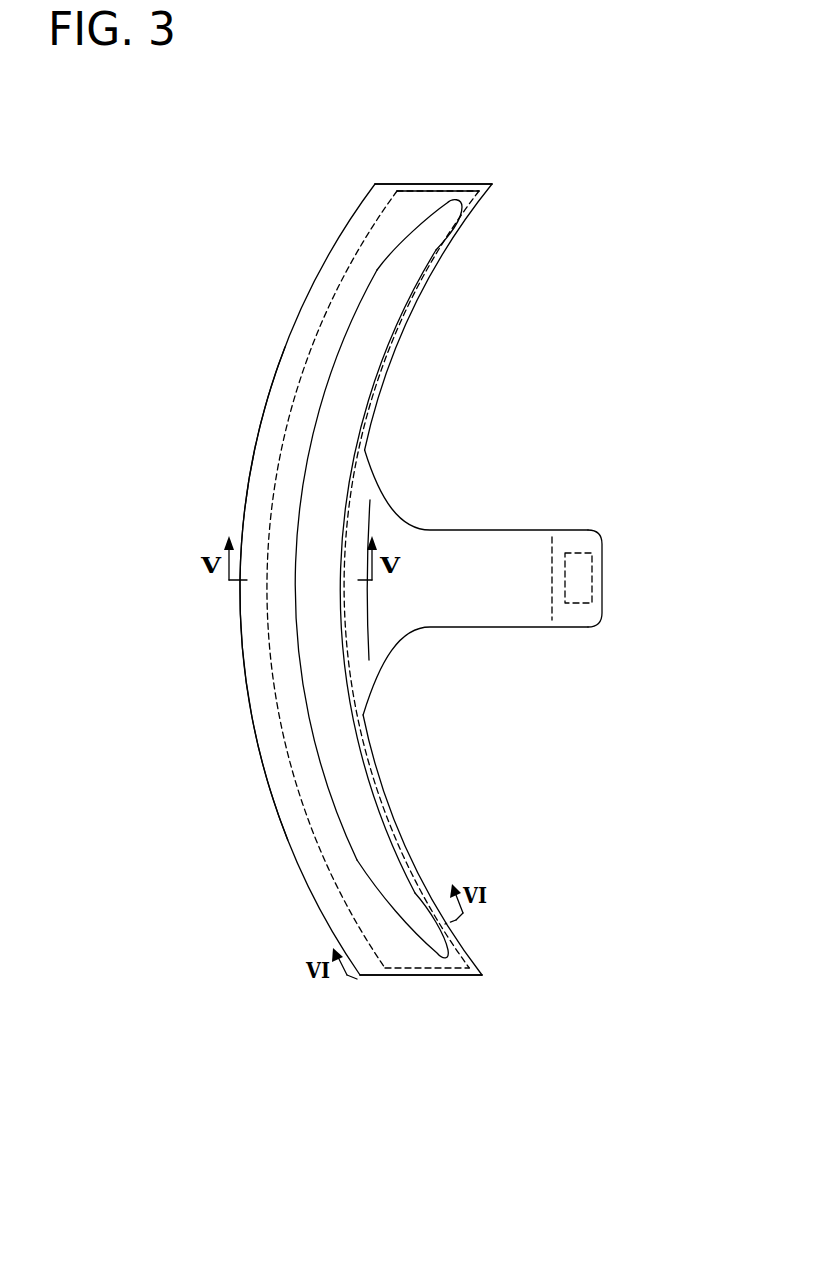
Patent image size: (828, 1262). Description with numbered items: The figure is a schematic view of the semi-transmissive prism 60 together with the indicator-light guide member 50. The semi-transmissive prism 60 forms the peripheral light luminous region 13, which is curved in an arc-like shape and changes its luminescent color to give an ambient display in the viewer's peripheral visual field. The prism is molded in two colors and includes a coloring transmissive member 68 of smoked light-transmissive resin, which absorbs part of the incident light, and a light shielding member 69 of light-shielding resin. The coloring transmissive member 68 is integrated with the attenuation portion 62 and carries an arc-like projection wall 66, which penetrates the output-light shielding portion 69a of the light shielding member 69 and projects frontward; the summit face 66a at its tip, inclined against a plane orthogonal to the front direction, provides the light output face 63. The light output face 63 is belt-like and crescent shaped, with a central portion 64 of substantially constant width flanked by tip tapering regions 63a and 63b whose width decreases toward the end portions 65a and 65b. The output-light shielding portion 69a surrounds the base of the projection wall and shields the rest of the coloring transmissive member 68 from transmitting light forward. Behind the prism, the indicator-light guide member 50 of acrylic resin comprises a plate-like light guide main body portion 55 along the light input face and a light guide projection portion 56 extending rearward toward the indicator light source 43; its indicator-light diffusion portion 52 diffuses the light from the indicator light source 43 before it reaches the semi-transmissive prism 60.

The peripheral light luminous region 13 is at (406, 250).
The indicator light source 43 is at (593, 573).
The indicator-light guide member 50 is at (531, 595).
The indicator-light diffusion portion 52 is at (378, 475).
The light guide main body portion 55 is at (360, 247).
The light guide projection portion 56 is at (462, 628).
The semi-transmissive prism 60 is at (438, 631).
The attenuation portion 62 is at (335, 352).
The light output face 63 is at (409, 579).
The tip tapering region 63a is at (430, 240).
The tip tapering region 63b is at (425, 892).
The central portion 64 is at (320, 505).
The end portion 65a is at (462, 200).
The end portion 65b is at (456, 976).
The arc-like projection wall 66 is at (313, 750).
The summit face 66a is at (350, 787).
The coloring transmissive member 68 is at (415, 938).
The light shielding member 69 is at (385, 975).
The output-light shielding portion 69a is at (310, 798).